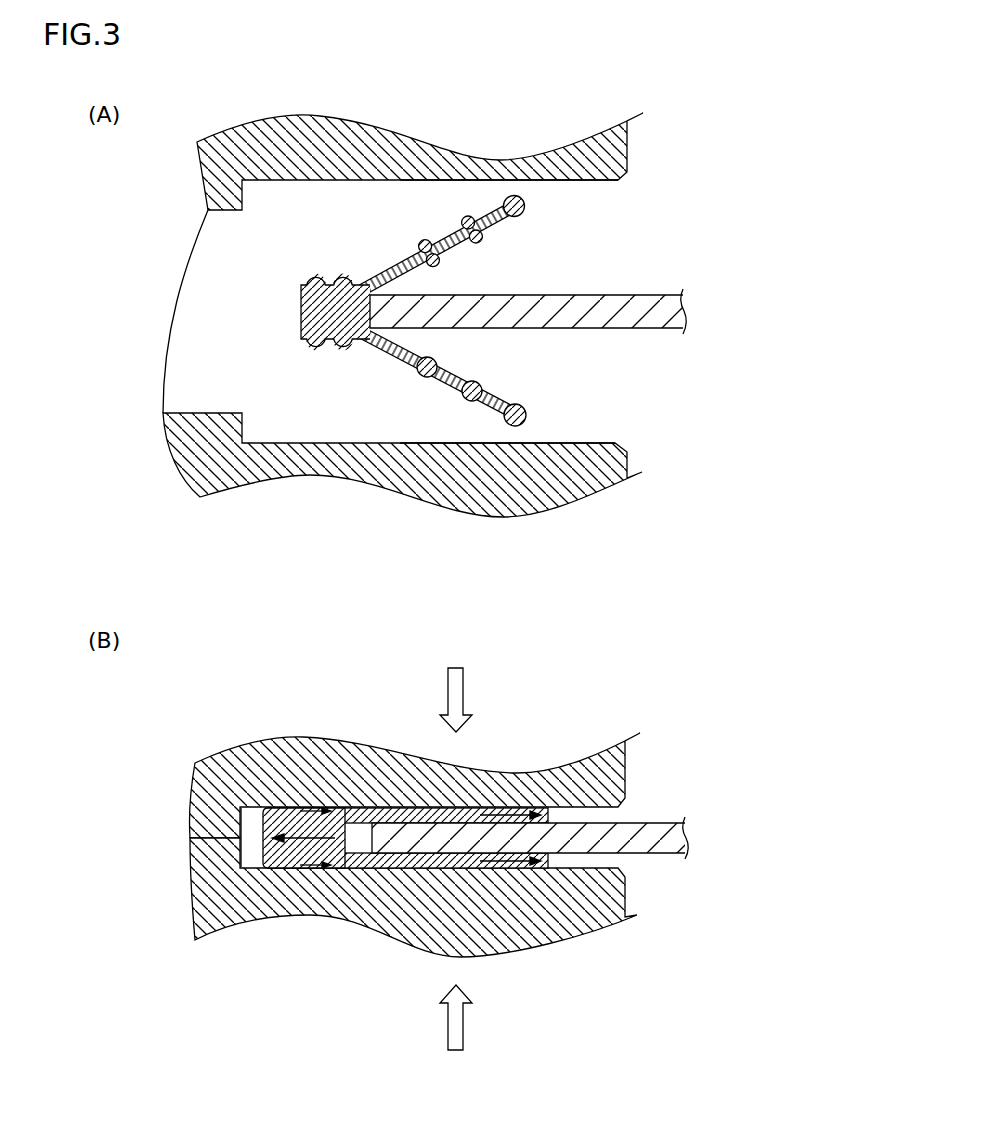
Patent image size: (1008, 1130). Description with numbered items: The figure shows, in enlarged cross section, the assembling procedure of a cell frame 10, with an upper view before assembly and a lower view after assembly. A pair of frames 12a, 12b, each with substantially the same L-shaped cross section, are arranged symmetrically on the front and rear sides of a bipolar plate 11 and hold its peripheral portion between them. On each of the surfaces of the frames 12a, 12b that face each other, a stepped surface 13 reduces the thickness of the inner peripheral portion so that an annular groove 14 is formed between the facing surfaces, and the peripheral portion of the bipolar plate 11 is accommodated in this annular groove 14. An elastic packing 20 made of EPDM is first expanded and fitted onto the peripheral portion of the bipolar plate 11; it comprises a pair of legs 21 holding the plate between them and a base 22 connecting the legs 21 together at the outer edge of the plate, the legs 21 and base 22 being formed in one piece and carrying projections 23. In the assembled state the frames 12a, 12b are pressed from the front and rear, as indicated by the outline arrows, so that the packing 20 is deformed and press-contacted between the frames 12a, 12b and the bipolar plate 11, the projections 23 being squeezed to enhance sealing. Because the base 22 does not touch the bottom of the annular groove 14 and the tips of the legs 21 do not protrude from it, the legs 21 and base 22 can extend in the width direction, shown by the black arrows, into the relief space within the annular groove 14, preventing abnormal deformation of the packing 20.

The cell frame 10 is at (175, 766).
The bipolar plate 11 is at (673, 312).
The frame 12a is at (210, 167).
The frame 12b is at (210, 455).
The stepped surface 13 is at (572, 181).
The annular groove 14 is at (249, 860).
The packing 20 is at (305, 280).
The leg 21 is at (445, 234).
The base 22 is at (302, 317).
The projection 23 is at (521, 214).